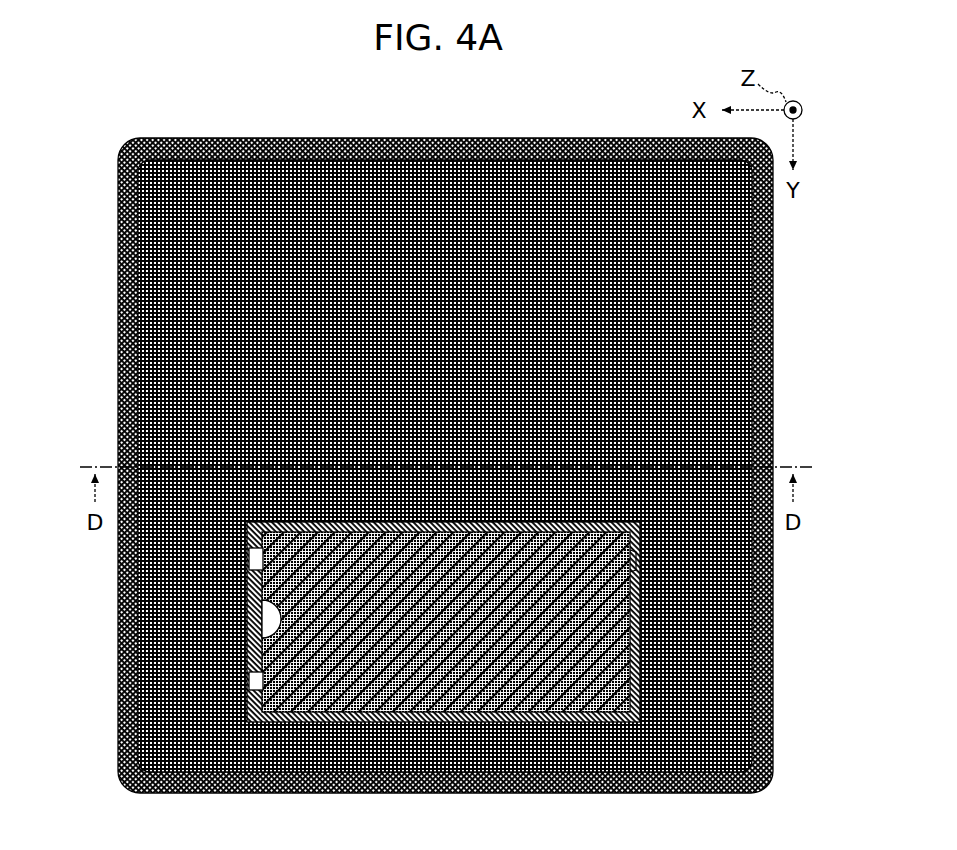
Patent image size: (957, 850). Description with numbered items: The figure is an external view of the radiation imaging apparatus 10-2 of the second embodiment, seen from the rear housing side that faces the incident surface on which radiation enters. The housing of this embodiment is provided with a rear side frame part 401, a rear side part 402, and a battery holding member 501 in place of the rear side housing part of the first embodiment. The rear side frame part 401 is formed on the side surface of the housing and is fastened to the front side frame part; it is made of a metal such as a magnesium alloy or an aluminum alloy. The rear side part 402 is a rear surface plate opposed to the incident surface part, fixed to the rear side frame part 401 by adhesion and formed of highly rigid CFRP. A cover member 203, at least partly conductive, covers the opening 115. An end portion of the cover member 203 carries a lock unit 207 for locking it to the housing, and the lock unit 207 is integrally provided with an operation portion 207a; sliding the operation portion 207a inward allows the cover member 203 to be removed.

The radiation imaging apparatus 10-2 is at (266, 132).
The rear side frame part 401 is at (291, 782).
The rear side part 402 is at (430, 738).
The cover member 203 is at (449, 691).
The opening 115 is at (517, 698).
The battery holding member 501 is at (600, 722).
The lock unit 207 is at (258, 682).
The operation portion 207a is at (274, 624).